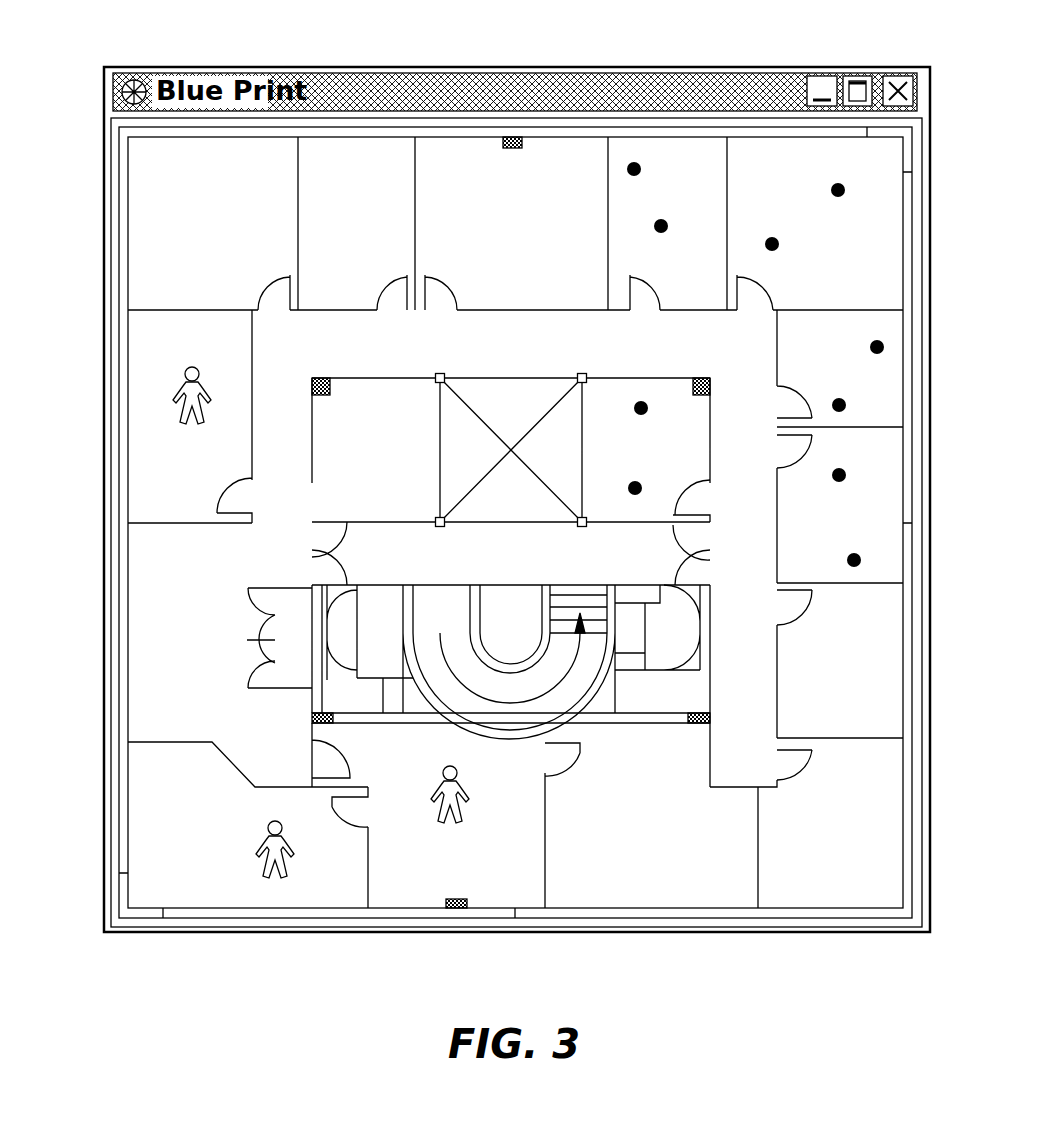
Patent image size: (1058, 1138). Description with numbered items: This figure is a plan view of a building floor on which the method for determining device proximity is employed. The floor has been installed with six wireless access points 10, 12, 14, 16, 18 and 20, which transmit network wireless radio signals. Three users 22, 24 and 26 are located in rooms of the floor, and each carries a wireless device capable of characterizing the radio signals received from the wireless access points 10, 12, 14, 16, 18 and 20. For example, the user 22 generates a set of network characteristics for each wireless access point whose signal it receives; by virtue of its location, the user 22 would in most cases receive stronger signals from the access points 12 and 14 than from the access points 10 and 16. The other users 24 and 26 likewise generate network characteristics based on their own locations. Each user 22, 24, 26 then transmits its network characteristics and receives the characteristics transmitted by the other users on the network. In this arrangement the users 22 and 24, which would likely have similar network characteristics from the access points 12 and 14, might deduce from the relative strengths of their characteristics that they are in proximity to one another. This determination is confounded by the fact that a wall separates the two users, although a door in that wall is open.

The wireless access point 10 is at (312, 378).
The wireless access point 12 is at (312, 730).
The wireless access point 14 is at (467, 905).
The wireless access point 16 is at (697, 728).
The wireless access point 18 is at (692, 384).
The wireless access point 20 is at (505, 138).
The user 22 is at (267, 863).
The user 24 is at (437, 815).
The user 26 is at (177, 385).